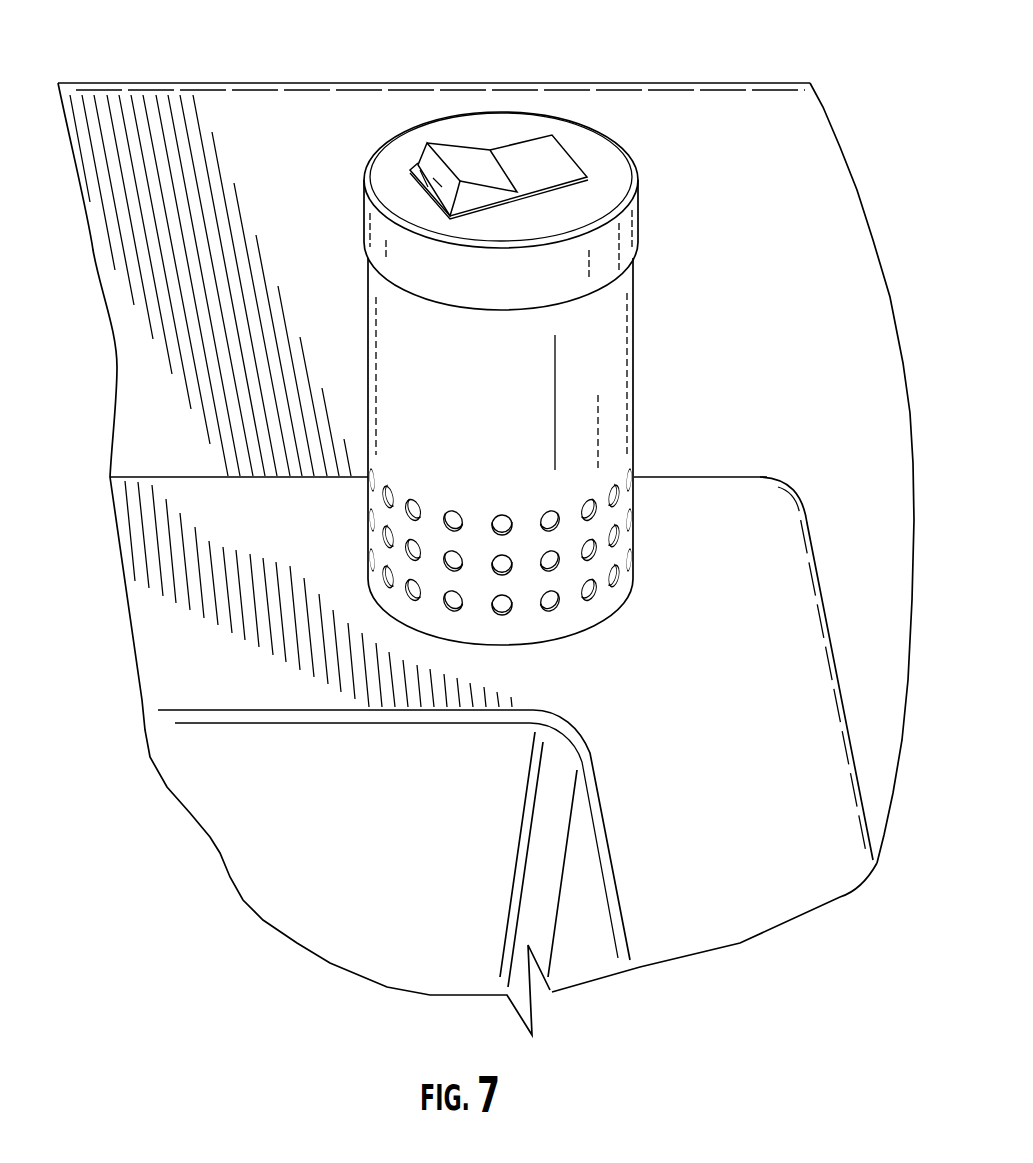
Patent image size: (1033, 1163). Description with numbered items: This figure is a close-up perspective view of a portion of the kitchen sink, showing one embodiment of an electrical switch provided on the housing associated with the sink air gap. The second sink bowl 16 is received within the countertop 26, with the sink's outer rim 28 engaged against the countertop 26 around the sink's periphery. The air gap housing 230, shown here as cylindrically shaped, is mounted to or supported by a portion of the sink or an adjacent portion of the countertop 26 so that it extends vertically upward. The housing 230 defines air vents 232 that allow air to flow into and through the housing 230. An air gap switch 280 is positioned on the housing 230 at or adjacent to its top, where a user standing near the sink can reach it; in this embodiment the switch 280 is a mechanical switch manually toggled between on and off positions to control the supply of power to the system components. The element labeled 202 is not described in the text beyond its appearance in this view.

The second sink bowl 16 is at (322, 841).
The countertop 26 is at (253, 127).
The outer rim 28 is at (737, 789).
The filter canister 202 is at (503, 335).
The air gap housing 230 is at (503, 453).
The air vents 232 is at (598, 592).
The air gap switch 280 is at (468, 158).